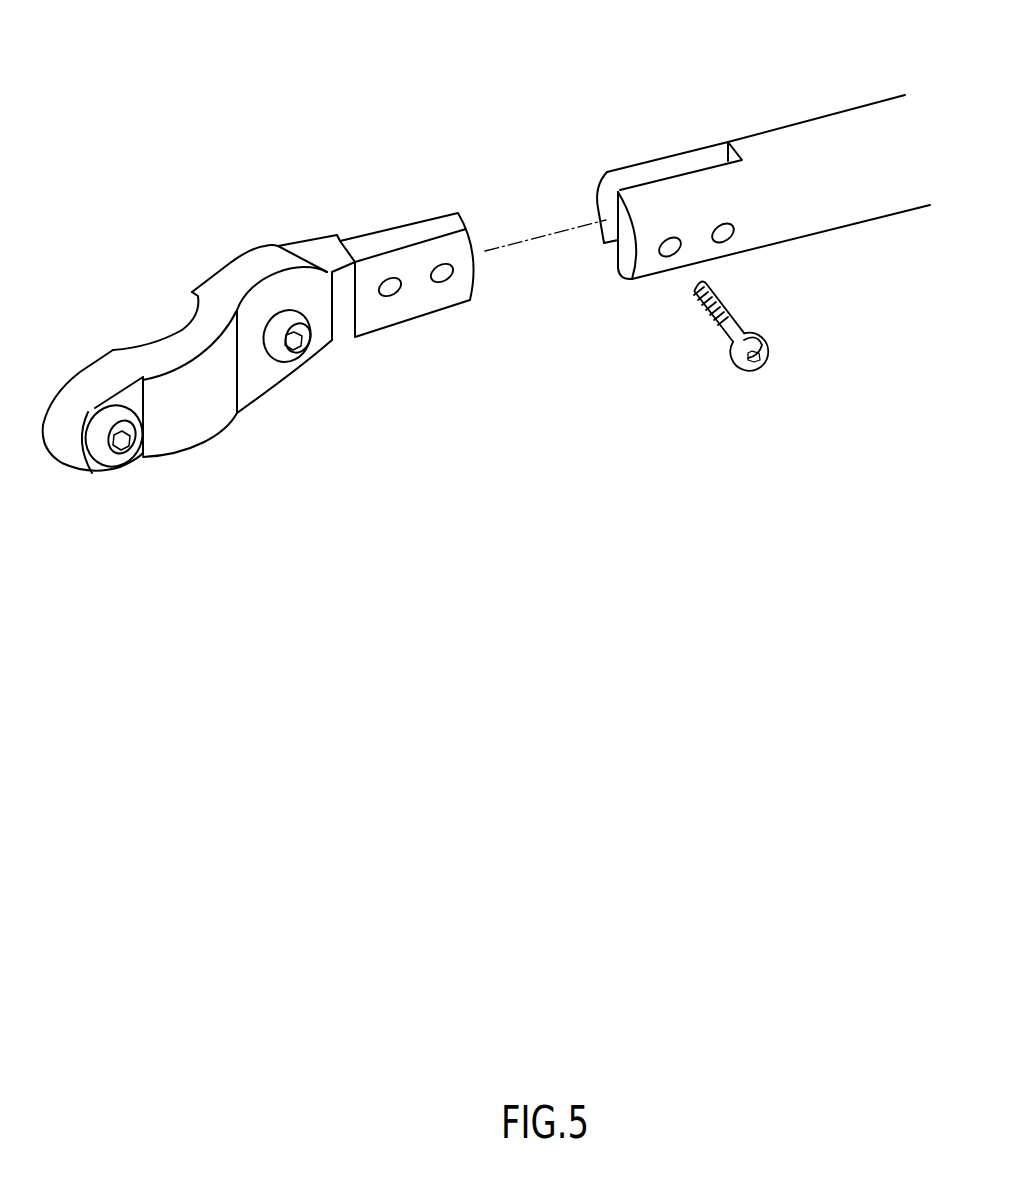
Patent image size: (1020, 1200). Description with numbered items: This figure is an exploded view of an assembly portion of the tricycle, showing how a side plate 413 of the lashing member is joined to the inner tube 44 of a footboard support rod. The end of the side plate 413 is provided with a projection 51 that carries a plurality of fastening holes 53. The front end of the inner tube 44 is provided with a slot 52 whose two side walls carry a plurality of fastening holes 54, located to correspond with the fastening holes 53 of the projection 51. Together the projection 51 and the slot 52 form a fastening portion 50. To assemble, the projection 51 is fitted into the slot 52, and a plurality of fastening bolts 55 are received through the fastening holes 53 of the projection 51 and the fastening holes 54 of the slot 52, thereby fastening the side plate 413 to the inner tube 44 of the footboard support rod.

The side plate 413 is at (203, 415).
The fastening portion 50 is at (408, 101).
The projection 51 is at (395, 232).
The slot 52 is at (655, 170).
The fastening holes 53 is at (445, 282).
The fastening holes 54 is at (715, 242).
The fastening bolts 55 is at (742, 323).
The inner tube 44 is at (848, 207).